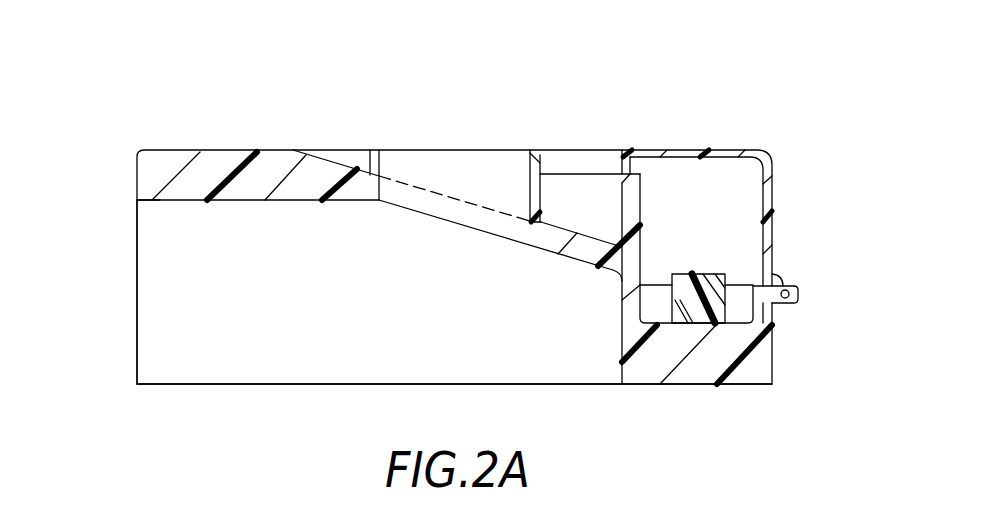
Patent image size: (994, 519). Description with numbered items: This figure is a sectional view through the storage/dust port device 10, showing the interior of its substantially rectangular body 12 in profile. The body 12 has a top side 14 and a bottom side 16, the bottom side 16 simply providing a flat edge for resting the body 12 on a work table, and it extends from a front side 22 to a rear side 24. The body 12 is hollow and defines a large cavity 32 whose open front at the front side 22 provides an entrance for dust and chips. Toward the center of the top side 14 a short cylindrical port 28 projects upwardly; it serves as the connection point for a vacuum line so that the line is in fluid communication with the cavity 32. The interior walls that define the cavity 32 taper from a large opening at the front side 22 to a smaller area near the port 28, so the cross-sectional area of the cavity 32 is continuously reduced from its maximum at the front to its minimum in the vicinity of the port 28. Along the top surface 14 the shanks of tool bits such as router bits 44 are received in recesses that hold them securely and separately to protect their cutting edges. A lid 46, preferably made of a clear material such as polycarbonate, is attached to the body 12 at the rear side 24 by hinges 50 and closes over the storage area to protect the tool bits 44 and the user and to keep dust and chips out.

The storage/dust port device 10 is at (722, 86).
The body 12 is at (760, 358).
The top side 14 is at (243, 146).
The bottom side 16 is at (677, 385).
The front side 22 is at (137, 357).
The rear side 24 is at (773, 318).
The cylindrical port 28 is at (540, 167).
The cavity 32 is at (160, 200).
The router bits 44 is at (727, 275).
The lid 46 is at (781, 171).
The hinges 50 is at (787, 284).